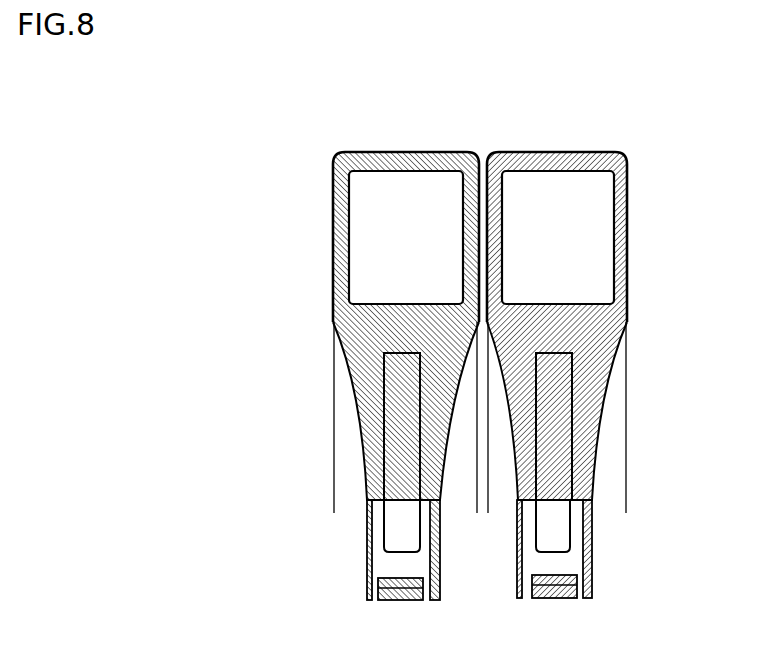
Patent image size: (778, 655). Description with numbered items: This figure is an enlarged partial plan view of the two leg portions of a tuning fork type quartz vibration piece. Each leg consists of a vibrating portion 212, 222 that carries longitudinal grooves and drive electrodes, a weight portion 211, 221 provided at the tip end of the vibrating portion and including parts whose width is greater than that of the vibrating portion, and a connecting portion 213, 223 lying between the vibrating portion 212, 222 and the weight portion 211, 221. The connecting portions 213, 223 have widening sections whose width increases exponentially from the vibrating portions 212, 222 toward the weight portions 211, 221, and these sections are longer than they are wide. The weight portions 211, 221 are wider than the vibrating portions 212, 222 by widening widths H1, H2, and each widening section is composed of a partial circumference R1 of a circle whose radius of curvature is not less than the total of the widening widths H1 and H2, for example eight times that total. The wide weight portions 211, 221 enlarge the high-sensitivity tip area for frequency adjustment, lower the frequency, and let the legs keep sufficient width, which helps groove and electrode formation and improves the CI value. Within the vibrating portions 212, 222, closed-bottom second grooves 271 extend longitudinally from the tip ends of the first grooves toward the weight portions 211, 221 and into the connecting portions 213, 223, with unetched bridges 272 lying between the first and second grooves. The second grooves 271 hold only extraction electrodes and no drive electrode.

The weight portion 211 is at (606, 154).
The connecting portion 213 is at (600, 390).
The vibrating portion 212 is at (567, 590).
The weight portion 221 is at (372, 154).
The connecting portion 223 is at (380, 398).
The vibrating portion 222 is at (380, 587).
The second groove 271 is at (397, 452).
The bridge 272 is at (402, 567).
The partial circumference R1 is at (360, 391).
The widening width H1 is at (365, 498).
The widening width H2 is at (475, 498).